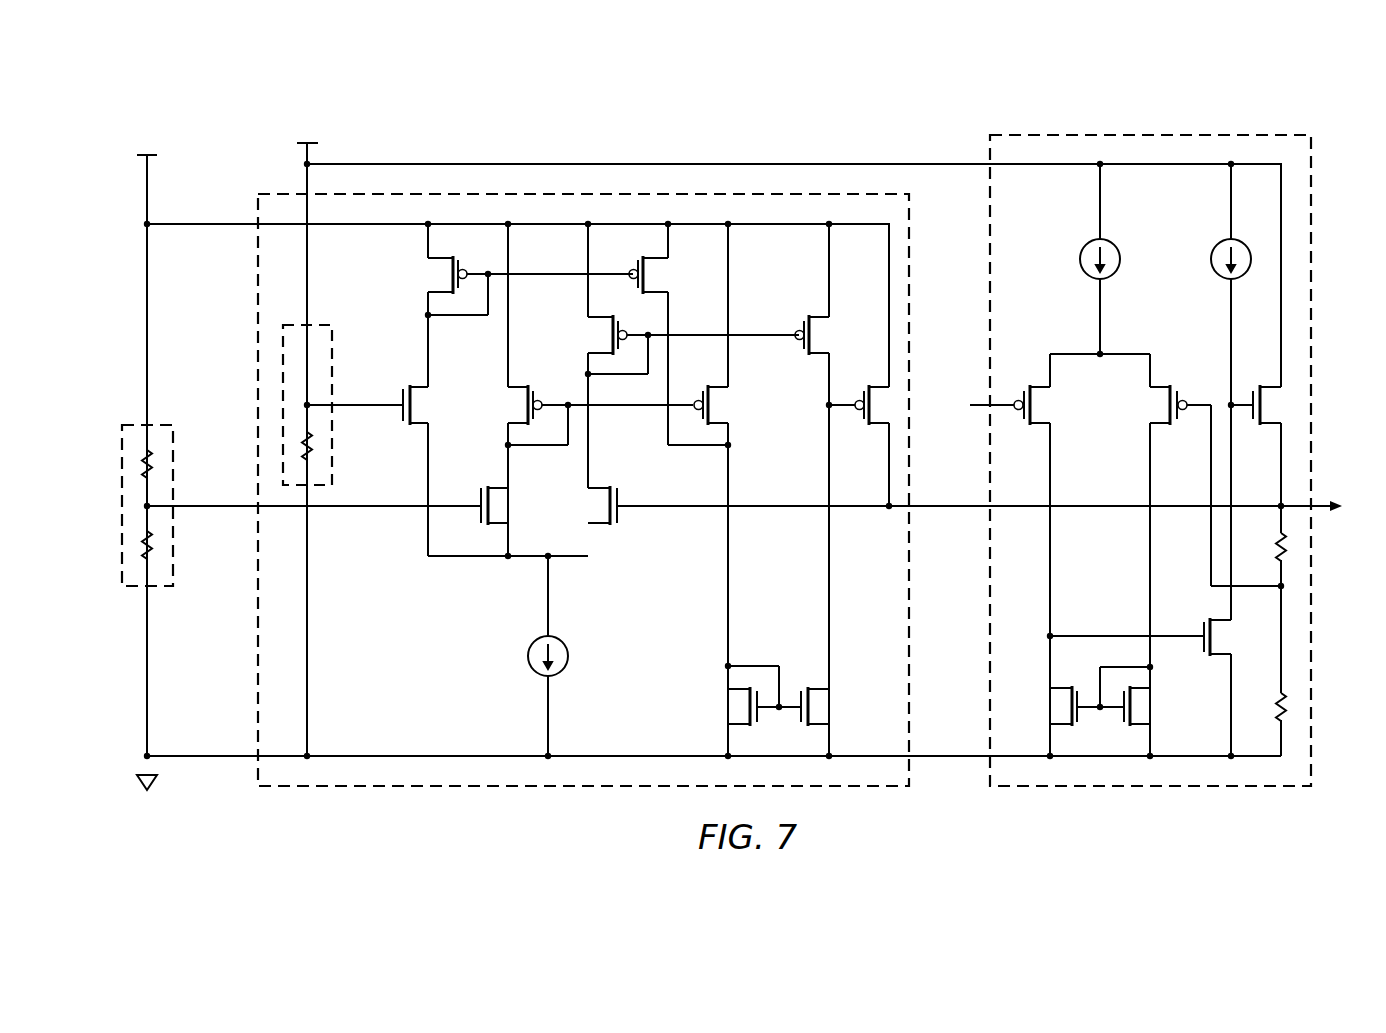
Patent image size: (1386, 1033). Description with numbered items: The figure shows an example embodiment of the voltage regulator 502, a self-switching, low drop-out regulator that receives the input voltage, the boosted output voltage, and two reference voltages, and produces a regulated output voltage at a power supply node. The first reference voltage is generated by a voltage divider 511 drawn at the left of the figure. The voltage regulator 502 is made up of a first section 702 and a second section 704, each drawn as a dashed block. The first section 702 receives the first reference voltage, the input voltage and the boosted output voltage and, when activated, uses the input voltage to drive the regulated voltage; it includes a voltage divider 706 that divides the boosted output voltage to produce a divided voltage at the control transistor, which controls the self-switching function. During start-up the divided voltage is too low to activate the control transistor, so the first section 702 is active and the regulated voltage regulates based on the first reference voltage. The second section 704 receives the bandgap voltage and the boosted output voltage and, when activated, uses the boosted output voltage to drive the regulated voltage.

The voltage regulator 502 is at (533, 98).
The voltage divider 511 is at (180, 444).
The first section 702 is at (450, 797).
The second section 704 is at (1162, 126).
The voltage divider 706 is at (341, 343).